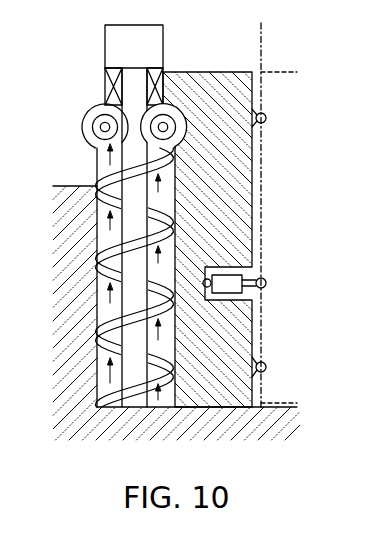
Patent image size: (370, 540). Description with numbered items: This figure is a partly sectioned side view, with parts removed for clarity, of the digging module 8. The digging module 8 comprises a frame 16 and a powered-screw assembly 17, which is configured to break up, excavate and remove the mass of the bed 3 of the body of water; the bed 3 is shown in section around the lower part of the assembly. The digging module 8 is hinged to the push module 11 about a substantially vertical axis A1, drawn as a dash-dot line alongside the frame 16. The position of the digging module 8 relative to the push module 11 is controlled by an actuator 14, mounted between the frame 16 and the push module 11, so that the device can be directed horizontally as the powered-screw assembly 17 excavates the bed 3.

The digging module 8 is at (208, 51).
The axis A1 is at (262, 36).
The powered-screw assembly 17 is at (86, 175).
The frame 16 is at (238, 180).
The bed 3 is at (66, 267).
The actuator 14 is at (249, 275).
The push module 11 is at (285, 401).